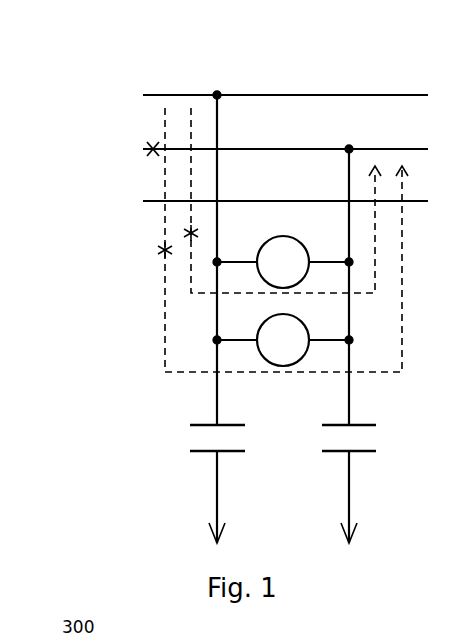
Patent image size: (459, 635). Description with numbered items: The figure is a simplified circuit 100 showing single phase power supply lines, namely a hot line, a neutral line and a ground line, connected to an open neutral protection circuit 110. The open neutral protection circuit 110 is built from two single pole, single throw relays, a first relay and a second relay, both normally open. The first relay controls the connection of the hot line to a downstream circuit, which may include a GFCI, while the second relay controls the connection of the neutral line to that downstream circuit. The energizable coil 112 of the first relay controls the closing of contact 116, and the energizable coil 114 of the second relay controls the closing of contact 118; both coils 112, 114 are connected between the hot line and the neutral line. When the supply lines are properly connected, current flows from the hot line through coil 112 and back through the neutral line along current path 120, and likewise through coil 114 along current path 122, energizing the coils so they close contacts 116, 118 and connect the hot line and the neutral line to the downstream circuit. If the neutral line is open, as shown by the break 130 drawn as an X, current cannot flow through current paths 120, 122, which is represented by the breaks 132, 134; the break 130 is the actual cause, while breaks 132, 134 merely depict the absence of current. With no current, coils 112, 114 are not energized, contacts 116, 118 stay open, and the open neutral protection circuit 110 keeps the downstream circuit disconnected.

The simplified circuit 100 is at (97, 70).
The open neutral protection circuit 110 is at (116, 238).
The energizable coil of relay R1 112 is at (292, 238).
The energizable coil of relay R2 114 is at (287, 366).
The contact of relay R1 116 is at (230, 452).
The contact of relay R2 118 is at (340, 452).
The current path 120 is at (377, 244).
The current path 122 is at (402, 283).
The break 130 is at (144, 160).
The break 132 is at (196, 222).
The break 134 is at (152, 254).